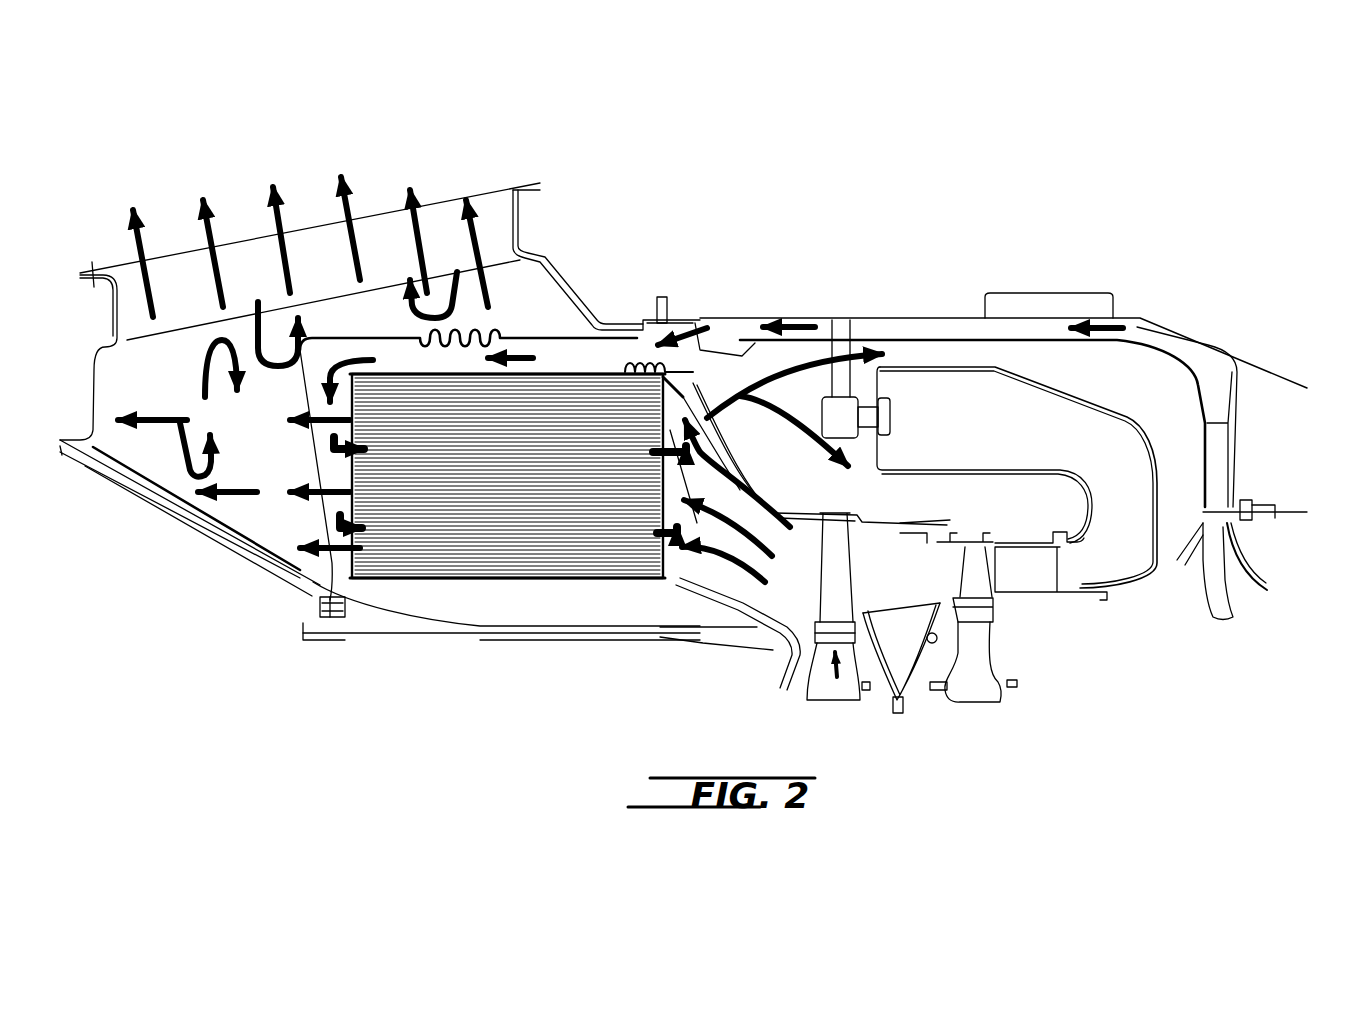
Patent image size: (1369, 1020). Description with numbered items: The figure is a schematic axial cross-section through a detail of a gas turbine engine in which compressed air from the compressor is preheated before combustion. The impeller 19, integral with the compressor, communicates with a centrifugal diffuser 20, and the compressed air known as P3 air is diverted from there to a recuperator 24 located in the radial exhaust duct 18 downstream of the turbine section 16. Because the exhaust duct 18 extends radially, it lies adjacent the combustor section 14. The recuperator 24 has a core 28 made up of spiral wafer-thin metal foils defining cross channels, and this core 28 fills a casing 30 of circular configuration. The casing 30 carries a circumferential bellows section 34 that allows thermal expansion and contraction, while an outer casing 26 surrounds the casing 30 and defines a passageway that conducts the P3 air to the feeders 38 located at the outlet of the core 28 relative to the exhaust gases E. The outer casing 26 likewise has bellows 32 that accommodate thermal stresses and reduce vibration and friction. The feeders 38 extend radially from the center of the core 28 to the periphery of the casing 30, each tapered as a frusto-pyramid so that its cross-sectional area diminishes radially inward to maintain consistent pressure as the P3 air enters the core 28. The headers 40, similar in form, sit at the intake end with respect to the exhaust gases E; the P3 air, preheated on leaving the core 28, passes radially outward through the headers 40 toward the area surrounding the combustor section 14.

The combustor section 14 is at (1080, 408).
The turbine section 16 is at (837, 677).
The exhaust duct 18 is at (308, 245).
The impeller 19 is at (1264, 585).
The centrifugal diffuser 20 is at (1224, 380).
The recuperator 24 is at (460, 586).
The outer casing 26 is at (362, 337).
The core 28 is at (748, 392).
The casing 30 is at (434, 374).
The bellows 32 is at (562, 292).
The bellows section 34 is at (590, 456).
The feeders 38 is at (330, 600).
The headers 40 is at (668, 584).
The exhaust gases E is at (200, 223).
The P3 air P3 is at (327, 447).